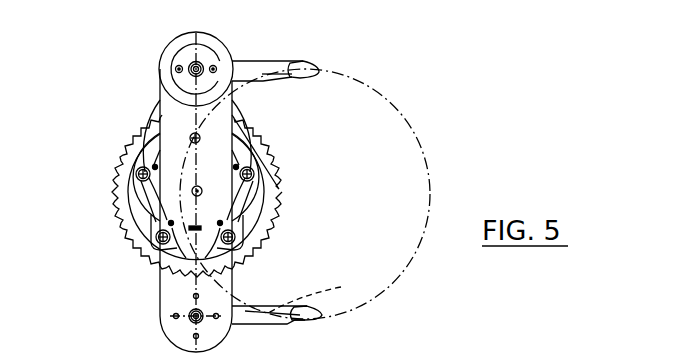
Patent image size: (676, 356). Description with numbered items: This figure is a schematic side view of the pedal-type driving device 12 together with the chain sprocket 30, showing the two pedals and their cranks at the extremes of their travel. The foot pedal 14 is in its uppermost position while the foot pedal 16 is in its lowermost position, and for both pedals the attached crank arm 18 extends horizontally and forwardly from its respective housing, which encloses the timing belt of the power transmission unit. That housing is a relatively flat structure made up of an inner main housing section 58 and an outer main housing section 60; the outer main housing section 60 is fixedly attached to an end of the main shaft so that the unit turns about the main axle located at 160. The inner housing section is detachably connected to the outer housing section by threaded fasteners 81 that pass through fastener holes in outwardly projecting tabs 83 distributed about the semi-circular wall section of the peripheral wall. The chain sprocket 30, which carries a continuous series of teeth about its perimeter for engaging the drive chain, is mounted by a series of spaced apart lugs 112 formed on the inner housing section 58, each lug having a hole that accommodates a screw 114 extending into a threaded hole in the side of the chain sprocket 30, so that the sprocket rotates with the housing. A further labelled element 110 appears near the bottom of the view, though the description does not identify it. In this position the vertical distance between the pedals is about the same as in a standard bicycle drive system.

The pedal-type driving device 12 is at (432, 100).
The foot pedal 14 is at (303, 61).
The foot pedal 16 is at (302, 293).
The crank arm 18 is at (243, 60).
The chain sprocket 30 is at (281, 193).
The inner main housing section 58 is at (158, 293).
The outer main housing section 60 is at (164, 110).
The threaded fastener 81 is at (245, 142).
The outwardly projecting tab 83 is at (134, 211).
The base 110 is at (346, 349).
The lug 112 is at (149, 168).
The screw 114 is at (249, 174).
The main axle 160 is at (201, 193).